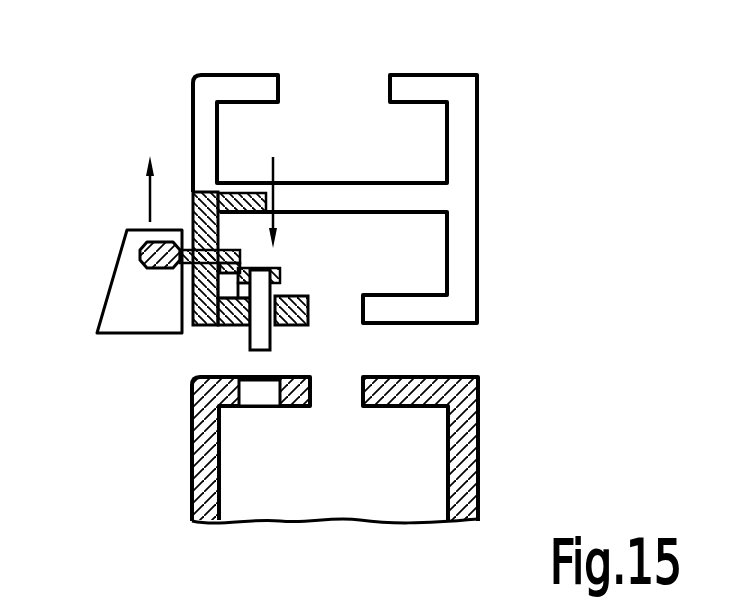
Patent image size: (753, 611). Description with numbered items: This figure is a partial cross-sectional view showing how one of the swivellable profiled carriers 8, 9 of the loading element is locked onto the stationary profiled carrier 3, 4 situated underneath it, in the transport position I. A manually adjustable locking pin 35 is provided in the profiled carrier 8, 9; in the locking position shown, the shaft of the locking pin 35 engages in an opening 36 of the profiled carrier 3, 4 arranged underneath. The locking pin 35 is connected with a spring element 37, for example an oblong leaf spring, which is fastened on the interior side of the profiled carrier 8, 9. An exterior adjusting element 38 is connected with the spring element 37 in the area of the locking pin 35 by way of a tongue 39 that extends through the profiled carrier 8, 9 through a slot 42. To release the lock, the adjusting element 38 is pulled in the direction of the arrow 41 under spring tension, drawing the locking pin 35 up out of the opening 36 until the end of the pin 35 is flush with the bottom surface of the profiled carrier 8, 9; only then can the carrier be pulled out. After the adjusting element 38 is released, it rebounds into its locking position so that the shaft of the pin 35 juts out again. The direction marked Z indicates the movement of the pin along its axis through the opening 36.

The profiled carrier 8 is at (410, 199).
The profiled carrier 9 is at (472, 124).
The profiled carrier 3 is at (366, 450).
The profiled carrier 4 is at (366, 450).
The locking pin 35 is at (247, 342).
The opening 36 is at (250, 395).
The spring element 37 is at (282, 272).
The adjusting element 38 is at (122, 310).
The tongue 39 is at (180, 263).
The arrow 41 is at (150, 197).
The slot 42 is at (148, 230).
The direction arrow Z is at (274, 160).
The transport position I is at (124, 96).